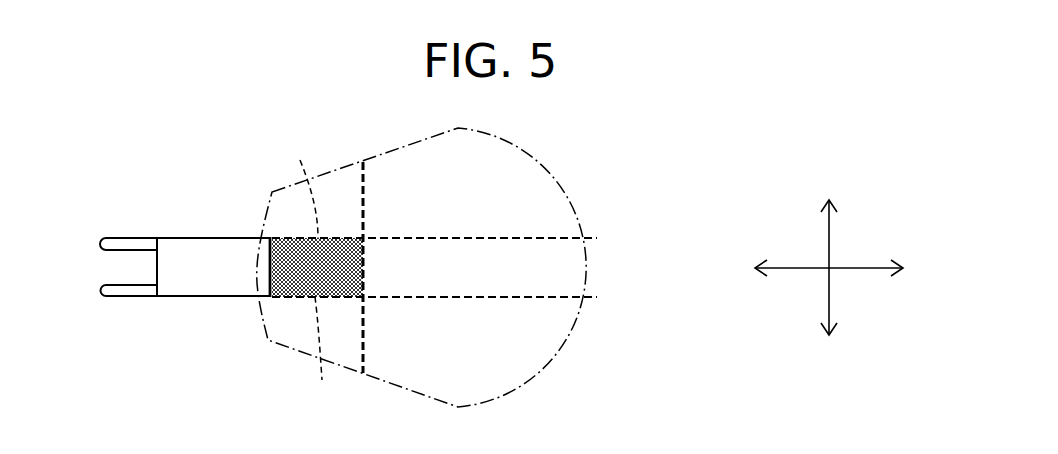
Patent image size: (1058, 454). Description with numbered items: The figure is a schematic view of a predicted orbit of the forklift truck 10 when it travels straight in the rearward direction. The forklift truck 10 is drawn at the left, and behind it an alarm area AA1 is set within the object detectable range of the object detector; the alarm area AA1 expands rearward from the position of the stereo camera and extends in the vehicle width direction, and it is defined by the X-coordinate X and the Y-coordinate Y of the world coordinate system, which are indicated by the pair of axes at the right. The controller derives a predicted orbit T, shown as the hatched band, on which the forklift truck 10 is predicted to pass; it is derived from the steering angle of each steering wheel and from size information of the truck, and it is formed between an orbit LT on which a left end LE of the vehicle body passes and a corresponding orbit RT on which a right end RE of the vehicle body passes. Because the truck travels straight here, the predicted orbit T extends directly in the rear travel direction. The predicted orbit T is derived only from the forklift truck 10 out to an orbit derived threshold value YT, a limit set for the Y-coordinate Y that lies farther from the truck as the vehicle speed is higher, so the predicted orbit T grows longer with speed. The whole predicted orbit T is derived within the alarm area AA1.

The forklift truck 10 is at (217, 237).
The right end of the vehicle body RE is at (245, 237).
The left end of the vehicle body LE is at (222, 300).
The upper boundary curve of target region RT is at (298, 181).
The orbit on which the left end passes LT is at (316, 359).
The predicted orbit T is at (347, 267).
The orbit derived threshold value YT is at (365, 333).
The alarm area AA1 is at (550, 163).
The X-coordinate X is at (829, 238).
The Y-coordinate Y is at (858, 268).